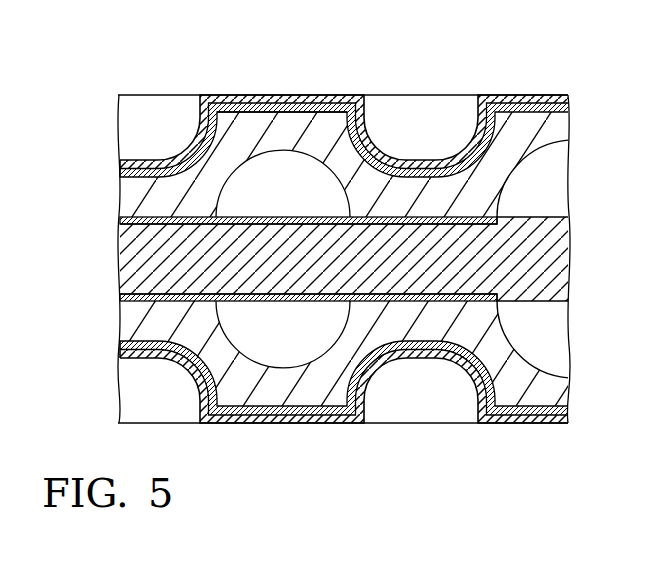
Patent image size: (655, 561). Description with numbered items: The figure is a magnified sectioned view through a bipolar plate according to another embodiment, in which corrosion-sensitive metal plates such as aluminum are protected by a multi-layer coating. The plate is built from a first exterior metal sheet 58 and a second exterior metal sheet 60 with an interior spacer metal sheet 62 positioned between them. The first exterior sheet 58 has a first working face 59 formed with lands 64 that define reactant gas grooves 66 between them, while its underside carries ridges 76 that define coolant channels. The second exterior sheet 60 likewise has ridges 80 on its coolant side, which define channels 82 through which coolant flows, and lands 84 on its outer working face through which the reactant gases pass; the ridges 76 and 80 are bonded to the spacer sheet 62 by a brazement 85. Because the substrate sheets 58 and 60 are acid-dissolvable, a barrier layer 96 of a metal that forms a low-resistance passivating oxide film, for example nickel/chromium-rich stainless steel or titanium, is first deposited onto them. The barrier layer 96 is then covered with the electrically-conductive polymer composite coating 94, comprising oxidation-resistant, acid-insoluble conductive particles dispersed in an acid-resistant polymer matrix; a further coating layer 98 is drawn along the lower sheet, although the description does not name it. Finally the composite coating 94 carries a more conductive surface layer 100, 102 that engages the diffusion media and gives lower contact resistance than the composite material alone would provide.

The first exterior metal sheet 58 is at (569, 112).
The first working face 59 is at (242, 88).
The second exterior metal sheet 60 is at (567, 392).
The interior spacer metal sheet 62 is at (533, 258).
The lands 64 is at (300, 124).
The grooves 66 is at (426, 120).
The ridges 76 is at (522, 228).
The ridges 80 is at (476, 294).
The channels 82 is at (427, 383).
The lands 84 is at (131, 322).
The brazement 85 is at (352, 220).
The electrically-conductive polymer composite coating 94 is at (550, 98).
The barrier/protective metal layer 96 is at (119, 171).
The inner film layer 98 is at (280, 398).
The surface layer 100 is at (502, 94).
The surface layer 102 is at (316, 425).